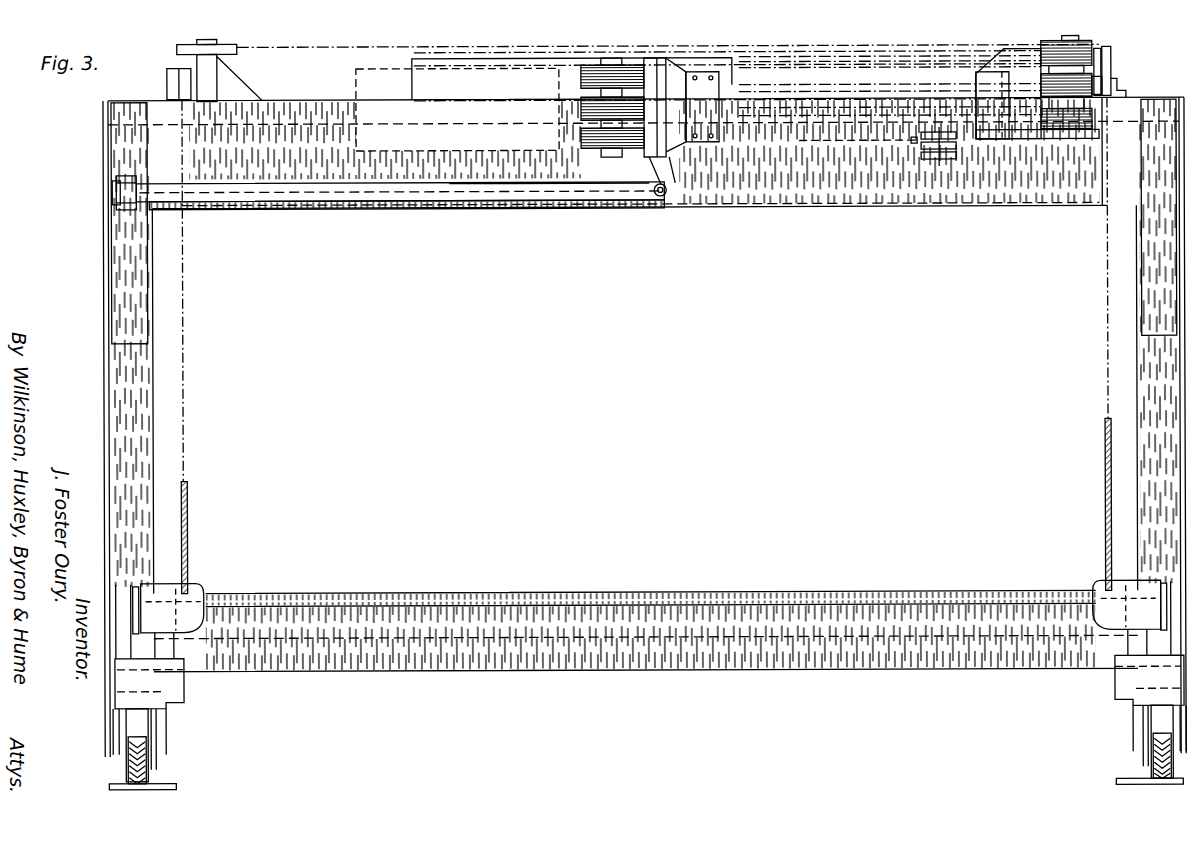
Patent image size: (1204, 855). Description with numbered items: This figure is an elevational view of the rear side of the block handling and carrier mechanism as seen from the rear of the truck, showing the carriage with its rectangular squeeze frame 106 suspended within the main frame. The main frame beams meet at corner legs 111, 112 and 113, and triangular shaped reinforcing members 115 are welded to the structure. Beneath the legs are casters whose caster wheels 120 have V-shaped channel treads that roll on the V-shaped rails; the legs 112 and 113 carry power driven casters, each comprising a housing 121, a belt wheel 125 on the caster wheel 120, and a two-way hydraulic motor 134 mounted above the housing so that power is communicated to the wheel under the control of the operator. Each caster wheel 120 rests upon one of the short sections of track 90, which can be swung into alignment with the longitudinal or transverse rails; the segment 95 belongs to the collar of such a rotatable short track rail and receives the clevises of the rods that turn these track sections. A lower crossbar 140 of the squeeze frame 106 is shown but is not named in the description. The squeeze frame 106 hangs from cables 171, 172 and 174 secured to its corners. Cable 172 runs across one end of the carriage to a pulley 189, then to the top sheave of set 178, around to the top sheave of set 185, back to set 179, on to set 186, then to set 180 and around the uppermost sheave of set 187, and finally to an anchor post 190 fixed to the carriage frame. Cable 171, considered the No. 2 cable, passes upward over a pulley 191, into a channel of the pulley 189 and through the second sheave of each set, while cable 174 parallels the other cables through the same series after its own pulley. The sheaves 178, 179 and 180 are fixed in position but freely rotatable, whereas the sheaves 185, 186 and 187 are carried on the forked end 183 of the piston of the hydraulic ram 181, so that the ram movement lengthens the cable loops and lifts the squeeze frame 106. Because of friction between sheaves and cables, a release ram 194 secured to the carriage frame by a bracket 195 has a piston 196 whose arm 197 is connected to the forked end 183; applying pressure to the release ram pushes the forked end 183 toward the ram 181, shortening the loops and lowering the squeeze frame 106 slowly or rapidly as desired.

The section line of FIG. 2 is at (215, 571).
The short track rail 90 is at (1162, 786).
The segment 95 is at (136, 789).
The squeeze frame 106 is at (762, 186).
The leg 111 is at (190, 500).
The leg 112 is at (1157, 477).
The leg 113 is at (133, 460).
The triangular shaped reinforcing member 115 is at (125, 262).
The caster wheel 120 is at (148, 778).
The housing 121 is at (185, 682).
The belt wheel 125 is at (155, 764).
The two-way hydraulic motor 134 is at (152, 578).
The lower cross beam 140 is at (255, 605).
The cable 171 is at (1062, 142).
The cable 172 is at (332, 48).
The cable 174 is at (1103, 471).
The set of sheaves 178 is at (1100, 50).
The set of sheaves 179 is at (1103, 84).
The set of sheaves 180 is at (1080, 142).
The hydraulic ram 181 is at (992, 140).
The forked end 183 is at (680, 146).
The set of sheaves 185 is at (580, 77).
The set of sheaves 186 is at (580, 109).
The set of sheaves 187 is at (580, 136).
The pulley 189 is at (225, 55).
The anchor post 190 is at (940, 166).
The pulley 191 is at (168, 74).
The release ram 194 is at (290, 184).
The bracket 195 is at (126, 173).
The piston 196 is at (522, 160).
The arm 197 is at (648, 168).